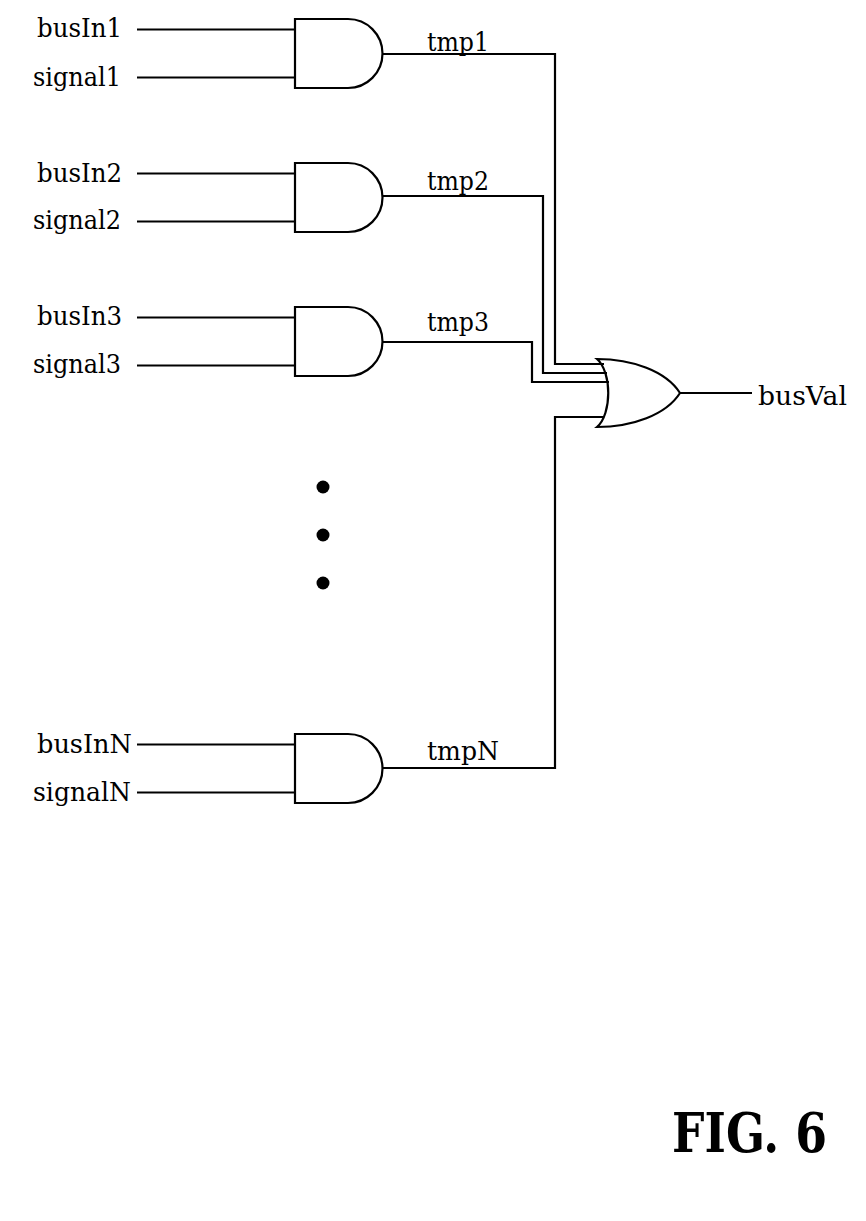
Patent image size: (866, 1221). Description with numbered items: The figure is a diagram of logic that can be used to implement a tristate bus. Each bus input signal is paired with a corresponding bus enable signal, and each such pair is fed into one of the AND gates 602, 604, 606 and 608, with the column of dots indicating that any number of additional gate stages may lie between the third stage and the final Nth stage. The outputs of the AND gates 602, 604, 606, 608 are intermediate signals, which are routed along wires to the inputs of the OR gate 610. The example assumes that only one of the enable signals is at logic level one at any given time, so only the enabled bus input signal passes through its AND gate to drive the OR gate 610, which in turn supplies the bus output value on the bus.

The AND gate 602 is at (339, 53).
The AND gate 604 is at (339, 197).
The AND gate 606 is at (339, 341).
The AND gate 608 is at (339, 768).
The OR gate 610 is at (638, 393).